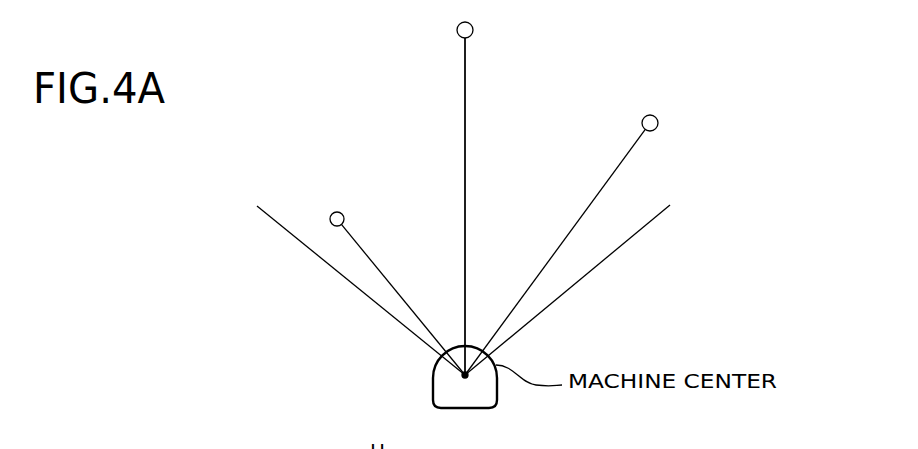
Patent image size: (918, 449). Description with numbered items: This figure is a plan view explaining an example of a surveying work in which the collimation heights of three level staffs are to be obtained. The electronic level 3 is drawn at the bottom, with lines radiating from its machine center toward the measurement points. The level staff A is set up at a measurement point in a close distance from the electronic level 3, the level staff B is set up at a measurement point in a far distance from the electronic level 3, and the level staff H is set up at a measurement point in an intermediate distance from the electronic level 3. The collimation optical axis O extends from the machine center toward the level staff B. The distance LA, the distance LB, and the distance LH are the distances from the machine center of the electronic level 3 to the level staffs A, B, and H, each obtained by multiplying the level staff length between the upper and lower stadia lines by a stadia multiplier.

The electronic level 3 is at (427, 383).
The level staff A is at (337, 205).
The level staff B is at (475, 31).
The level staff H is at (650, 111).
The collimation optical axis O is at (468, 117).
The distance LA is at (390, 282).
The distance LB is at (467, 222).
The distance LH is at (608, 185).